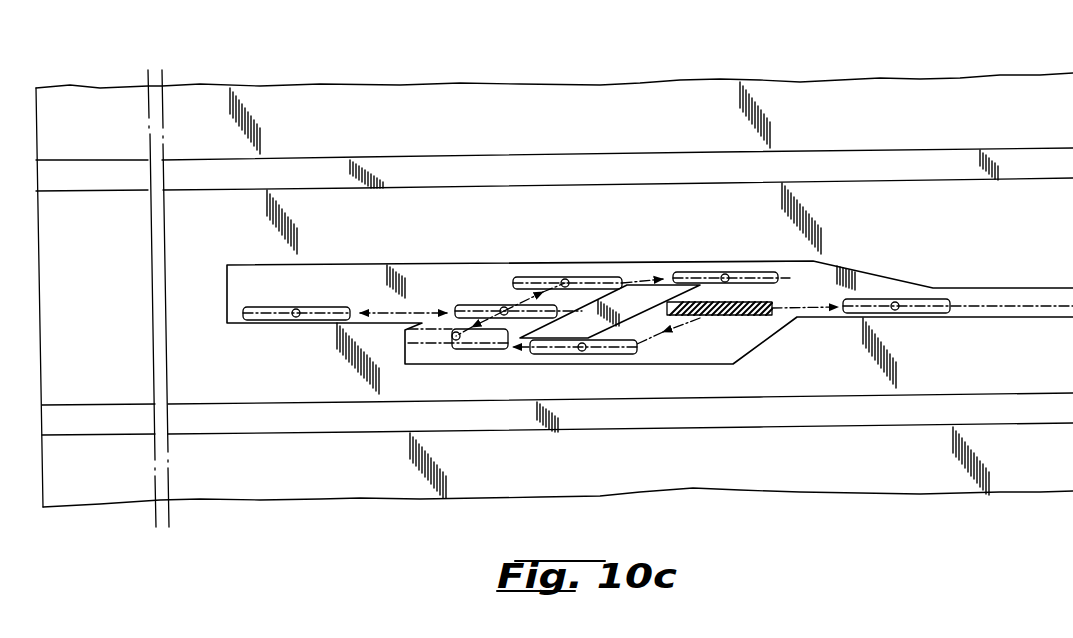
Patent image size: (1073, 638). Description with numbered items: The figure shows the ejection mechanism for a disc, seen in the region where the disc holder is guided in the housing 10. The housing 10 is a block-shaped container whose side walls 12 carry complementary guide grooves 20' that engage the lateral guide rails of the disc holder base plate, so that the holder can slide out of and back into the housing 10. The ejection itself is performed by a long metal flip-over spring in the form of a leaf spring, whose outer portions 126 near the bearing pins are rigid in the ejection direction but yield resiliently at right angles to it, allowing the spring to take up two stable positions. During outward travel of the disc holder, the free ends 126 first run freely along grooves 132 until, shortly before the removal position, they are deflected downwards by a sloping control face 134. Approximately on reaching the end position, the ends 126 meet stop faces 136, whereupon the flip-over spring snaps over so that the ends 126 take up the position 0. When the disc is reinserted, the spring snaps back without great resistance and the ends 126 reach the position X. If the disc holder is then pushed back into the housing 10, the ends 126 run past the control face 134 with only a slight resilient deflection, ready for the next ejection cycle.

The housing 10 is at (396, 80).
The side wall 12 is at (637, 98).
The guide groove 20' is at (554, 291).
The position "o" 0 is at (566, 279).
The position "x" X is at (296, 318).
The sloping control face 134 is at (633, 292).
The outer portions (free ends) of flip-over spring 126 is at (743, 316).
The groove 132 is at (1003, 293).
The stop face 136 is at (407, 351).